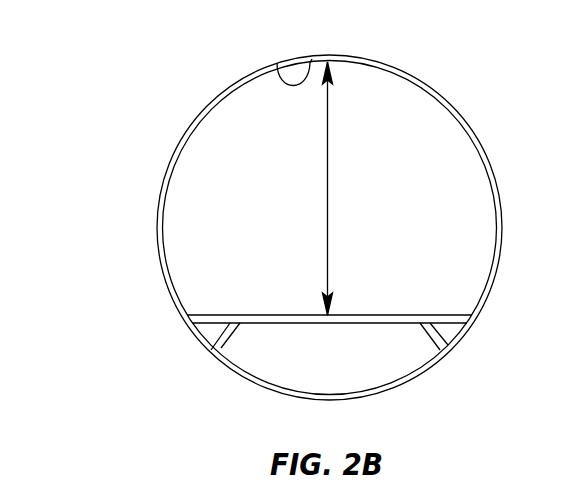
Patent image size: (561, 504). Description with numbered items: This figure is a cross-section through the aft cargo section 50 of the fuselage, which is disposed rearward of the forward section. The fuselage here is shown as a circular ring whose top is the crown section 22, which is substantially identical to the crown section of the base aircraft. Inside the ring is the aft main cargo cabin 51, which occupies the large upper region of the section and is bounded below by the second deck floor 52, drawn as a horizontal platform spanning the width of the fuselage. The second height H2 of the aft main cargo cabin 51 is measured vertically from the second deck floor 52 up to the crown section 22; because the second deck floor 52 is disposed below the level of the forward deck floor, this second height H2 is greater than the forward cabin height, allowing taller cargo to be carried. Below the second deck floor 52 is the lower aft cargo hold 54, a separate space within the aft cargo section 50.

The crown section 22 is at (278, 68).
The aft cargo section 50 is at (250, 150).
The aft main cargo cabin 51 is at (218, 192).
The second deck floor 52 is at (405, 315).
The lower aft cargo hold 54 is at (273, 350).
The second height H2 is at (328, 166).